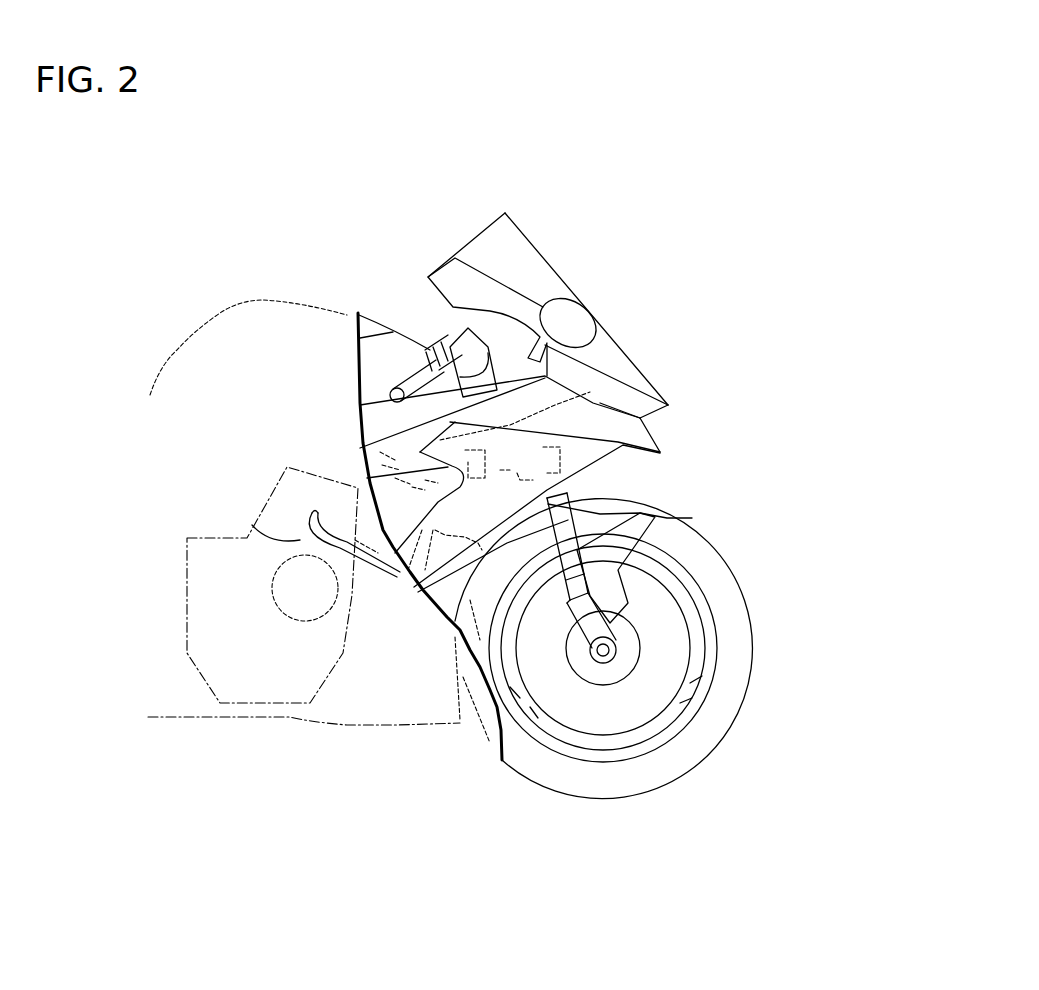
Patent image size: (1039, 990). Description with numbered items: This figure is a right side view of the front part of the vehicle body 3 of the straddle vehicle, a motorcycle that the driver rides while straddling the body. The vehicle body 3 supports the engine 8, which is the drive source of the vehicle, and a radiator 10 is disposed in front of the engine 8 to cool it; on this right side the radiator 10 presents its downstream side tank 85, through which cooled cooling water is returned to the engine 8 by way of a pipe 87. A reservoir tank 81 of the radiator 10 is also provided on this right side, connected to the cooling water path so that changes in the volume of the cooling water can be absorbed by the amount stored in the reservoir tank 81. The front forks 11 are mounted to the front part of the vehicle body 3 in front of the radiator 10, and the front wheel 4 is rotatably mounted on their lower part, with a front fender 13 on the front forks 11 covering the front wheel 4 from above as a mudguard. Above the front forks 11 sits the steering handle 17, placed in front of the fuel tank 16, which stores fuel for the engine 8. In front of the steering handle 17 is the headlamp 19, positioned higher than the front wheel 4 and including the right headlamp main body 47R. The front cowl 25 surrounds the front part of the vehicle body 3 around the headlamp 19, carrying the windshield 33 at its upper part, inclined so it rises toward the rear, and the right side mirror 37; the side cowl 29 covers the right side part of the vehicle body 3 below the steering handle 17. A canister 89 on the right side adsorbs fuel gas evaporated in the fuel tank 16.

The vehicle body 3 is at (370, 745).
The front wheel 4 is at (665, 767).
The engine 8 is at (240, 705).
The radiator 10 is at (356, 404).
The front forks 11 is at (600, 575).
The front fender 13 is at (650, 503).
The fuel tank 16 is at (245, 300).
The steering handle 17 is at (410, 370).
The headlamp 19 is at (670, 411).
The front cowl 25 is at (637, 367).
The side cowl 29 is at (605, 475).
The windshield 33 is at (527, 257).
The side mirror 37 is at (557, 303).
The headlamp main body 47R is at (643, 421).
The reservoir tank 81 is at (448, 592).
The downstream side tank 85 is at (358, 445).
The pipe 87 is at (262, 538).
The canister 89 is at (610, 367).